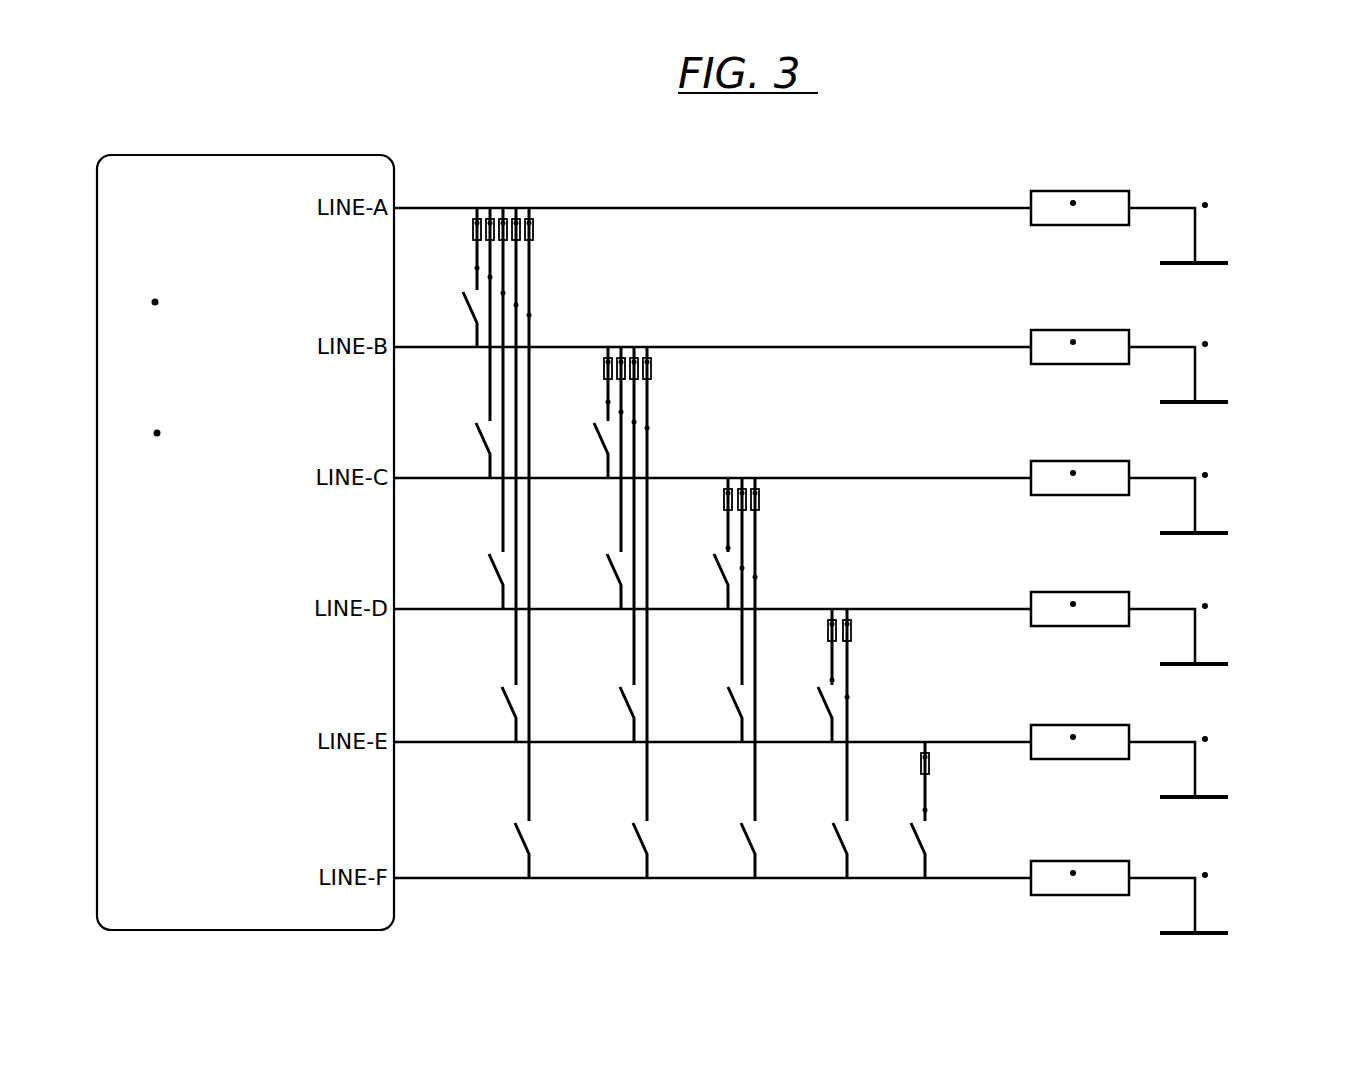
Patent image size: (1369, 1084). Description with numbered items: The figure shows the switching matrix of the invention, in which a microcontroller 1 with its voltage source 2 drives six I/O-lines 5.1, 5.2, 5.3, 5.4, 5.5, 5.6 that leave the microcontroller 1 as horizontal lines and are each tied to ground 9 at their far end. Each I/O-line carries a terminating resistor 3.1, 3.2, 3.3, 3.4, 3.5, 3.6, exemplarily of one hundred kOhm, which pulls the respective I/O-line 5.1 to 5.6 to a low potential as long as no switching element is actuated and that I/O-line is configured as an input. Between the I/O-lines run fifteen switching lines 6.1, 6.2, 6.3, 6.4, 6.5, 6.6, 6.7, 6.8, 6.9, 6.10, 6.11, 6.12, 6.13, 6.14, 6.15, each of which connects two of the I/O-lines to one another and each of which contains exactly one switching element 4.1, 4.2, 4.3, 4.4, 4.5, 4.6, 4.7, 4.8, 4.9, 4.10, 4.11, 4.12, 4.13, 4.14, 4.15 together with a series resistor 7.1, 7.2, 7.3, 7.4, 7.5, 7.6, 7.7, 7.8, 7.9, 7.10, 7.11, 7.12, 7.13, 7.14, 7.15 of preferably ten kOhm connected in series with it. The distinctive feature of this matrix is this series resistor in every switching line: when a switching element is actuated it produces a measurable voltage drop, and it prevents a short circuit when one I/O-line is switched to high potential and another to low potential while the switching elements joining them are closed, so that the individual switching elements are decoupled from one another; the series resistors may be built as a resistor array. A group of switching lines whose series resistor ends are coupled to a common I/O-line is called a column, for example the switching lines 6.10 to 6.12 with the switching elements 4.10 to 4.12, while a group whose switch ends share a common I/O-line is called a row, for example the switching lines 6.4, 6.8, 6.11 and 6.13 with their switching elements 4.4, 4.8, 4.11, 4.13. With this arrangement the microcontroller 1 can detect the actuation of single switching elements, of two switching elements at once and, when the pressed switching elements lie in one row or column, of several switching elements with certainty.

The microcontroller 1 is at (155, 302).
The voltage source 2 is at (157, 433).
The terminating resistor 3.1 is at (1073, 203).
The terminating resistor 3.2 is at (1073, 342).
The terminating resistor 3.3 is at (1073, 473).
The terminating resistor 3.4 is at (1073, 604).
The terminating resistor 3.5 is at (1073, 737).
The terminating resistor 3.6 is at (1073, 873).
The switching element 4.1 is at (457, 277).
The switching element 4.2 is at (470, 343).
The switching element 4.3 is at (483, 408).
The switching element 4.4 is at (496, 475).
The switching element 4.5 is at (509, 543).
The switching element 4.6 is at (588, 412).
The switching element 4.7 is at (601, 478).
The switching element 4.8 is at (614, 544).
The switching element 4.9 is at (627, 612).
The switching element 4.10 is at (700, 543).
The switching element 4.11 is at (714, 610).
The switching element 4.12 is at (727, 678).
The switching element 4.13 is at (804, 675).
The switching element 4.14 is at (819, 743).
The switching element 4.15 is at (897, 810).
The I/O-line 5.1 is at (1205, 205).
The I/O-line 5.2 is at (1205, 344).
The I/O-line 5.3 is at (1205, 475).
The I/O-line 5.4 is at (1205, 606).
The I/O-line 5.5 is at (1205, 739).
The I/O-line 5.6 is at (1205, 875).
The switching line 6.1 is at (477, 268).
The switching line 6.2 is at (607, 257).
The switching line 6.3 is at (607, 257).
The switching line 6.4 is at (607, 257).
The switching line 6.5 is at (607, 257).
The switching line 6.6 is at (608, 402).
The switching line 6.7 is at (735, 388).
The switching line 6.8 is at (735, 388).
The switching line 6.9 is at (735, 388).
The switching line 6.10 is at (863, 528).
The switching line 6.11 is at (863, 528).
The switching line 6.12 is at (863, 528).
The switching line 6.13 is at (923, 650).
The switching line 6.14 is at (923, 650).
The switching line 6.15 is at (925, 810).
The series resistor 7.1 is at (477, 223).
The series resistor 7.2 is at (509, 156).
The series resistor 7.3 is at (510, 156).
The series resistor 7.4 is at (511, 156).
The series resistor 7.5 is at (512, 156).
The series resistor 7.6 is at (608, 362).
The series resistor 7.7 is at (733, 322).
The series resistor 7.8 is at (733, 322).
The series resistor 7.9 is at (733, 322).
The series resistor 7.10 is at (820, 458).
The series resistor 7.11 is at (820, 458).
The series resistor 7.12 is at (820, 458).
The series resistor 7.13 is at (888, 590).
The series resistor 7.14 is at (888, 590).
The series resistor 7.15 is at (925, 757).
The ground 9 is at (1222, 253).